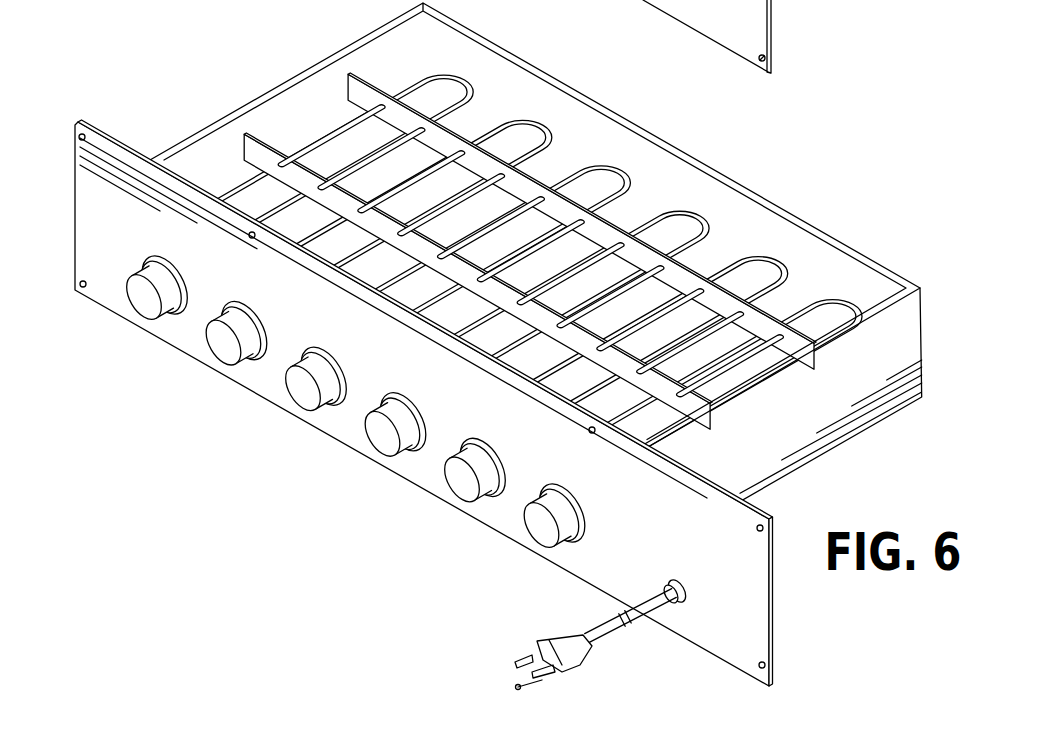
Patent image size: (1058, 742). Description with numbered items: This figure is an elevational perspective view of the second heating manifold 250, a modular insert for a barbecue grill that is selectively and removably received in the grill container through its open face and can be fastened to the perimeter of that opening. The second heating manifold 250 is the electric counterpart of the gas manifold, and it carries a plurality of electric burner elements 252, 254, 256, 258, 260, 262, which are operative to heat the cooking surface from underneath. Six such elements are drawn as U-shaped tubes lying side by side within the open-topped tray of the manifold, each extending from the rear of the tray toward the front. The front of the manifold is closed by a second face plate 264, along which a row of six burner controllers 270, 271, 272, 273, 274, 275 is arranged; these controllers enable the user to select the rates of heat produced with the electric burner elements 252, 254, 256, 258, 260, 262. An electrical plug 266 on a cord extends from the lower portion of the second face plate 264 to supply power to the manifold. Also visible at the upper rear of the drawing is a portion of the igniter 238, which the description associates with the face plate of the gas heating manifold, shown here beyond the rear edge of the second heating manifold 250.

The second heating manifold 250 is at (251, 75).
The igniter 238 is at (661, 10).
The electric burner element 252 is at (470, 85).
The electric burner element 254 is at (549, 130).
The electric burner element 256 is at (628, 176).
The electric burner element 258 is at (706, 221).
The electric burner element 260 is at (785, 266).
The electric burner element 262 is at (860, 309).
The second face plate 264 is at (74, 150).
The electrical plug 266 is at (537, 641).
The burner controller 270 is at (144, 303).
The burner controller 271 is at (224, 349).
The burner controller 272 is at (303, 394).
The burner controller 273 is at (382, 440).
The burner controller 274 is at (462, 485).
The burner controller 275 is at (542, 531).